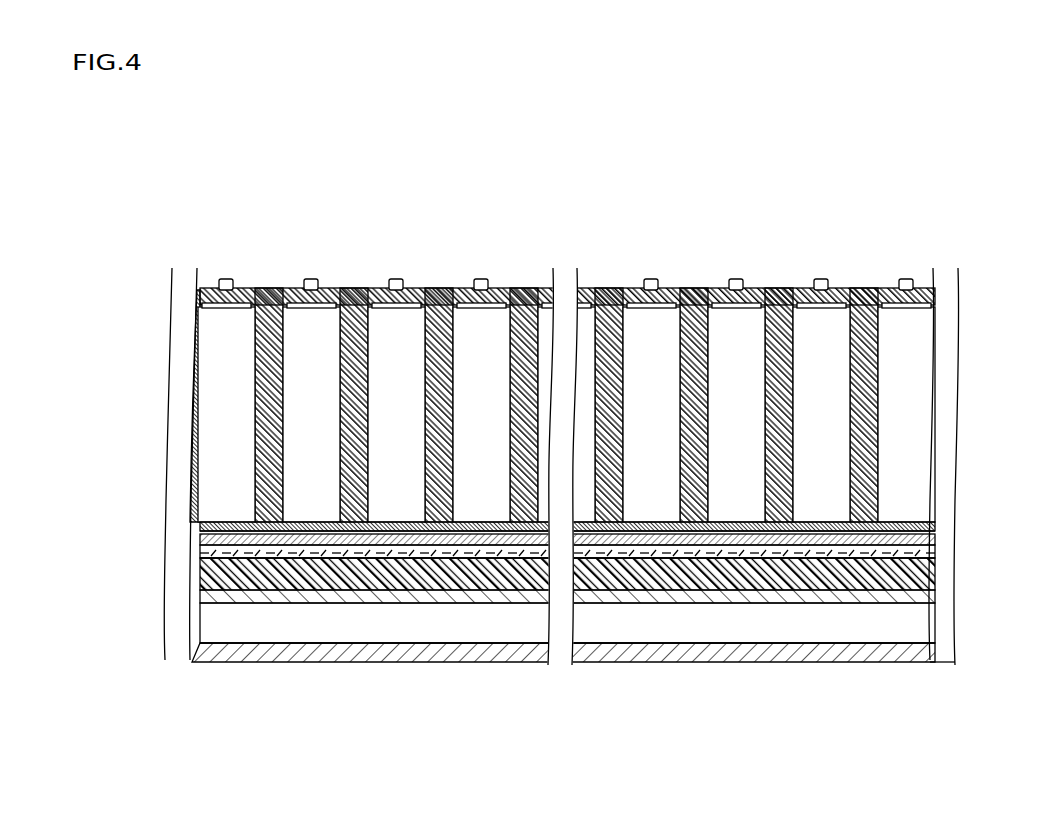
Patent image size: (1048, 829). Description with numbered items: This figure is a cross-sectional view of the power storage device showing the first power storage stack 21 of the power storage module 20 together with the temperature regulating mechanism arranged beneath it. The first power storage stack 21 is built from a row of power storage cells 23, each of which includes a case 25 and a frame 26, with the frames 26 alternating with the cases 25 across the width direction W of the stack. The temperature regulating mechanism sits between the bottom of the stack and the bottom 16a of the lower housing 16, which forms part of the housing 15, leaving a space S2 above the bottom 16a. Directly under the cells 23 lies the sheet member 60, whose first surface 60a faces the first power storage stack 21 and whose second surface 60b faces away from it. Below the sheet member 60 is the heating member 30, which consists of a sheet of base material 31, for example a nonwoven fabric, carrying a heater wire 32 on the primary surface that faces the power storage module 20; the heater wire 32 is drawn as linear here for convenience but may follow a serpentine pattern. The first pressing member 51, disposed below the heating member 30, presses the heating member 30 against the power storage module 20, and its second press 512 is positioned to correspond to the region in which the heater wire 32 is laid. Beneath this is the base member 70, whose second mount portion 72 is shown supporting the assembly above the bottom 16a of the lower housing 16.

The power storage module 20 is at (599, 433).
The first power storage stack 21 is at (940, 192).
The power storage cell 23 is at (363, 236).
The case 25 is at (297, 290).
The frame 26 is at (341, 290).
The sheet member 60 is at (457, 530).
The first surface 60a is at (922, 530).
The second surface 60b is at (924, 550).
The heating member 30 is at (430, 698).
The base material 31 is at (357, 557).
The heater wire 32 is at (407, 542).
The first pressing member 51 is at (567, 660).
The second press 512 is at (298, 575).
The base member 70 is at (567, 676).
The second mount portion 72 is at (235, 596).
The space S2 is at (596, 620).
The housing 15 is at (563, 703).
The lower housing 16 is at (520, 662).
The bottom 16a is at (652, 643).
The width direction W is at (727, 715).